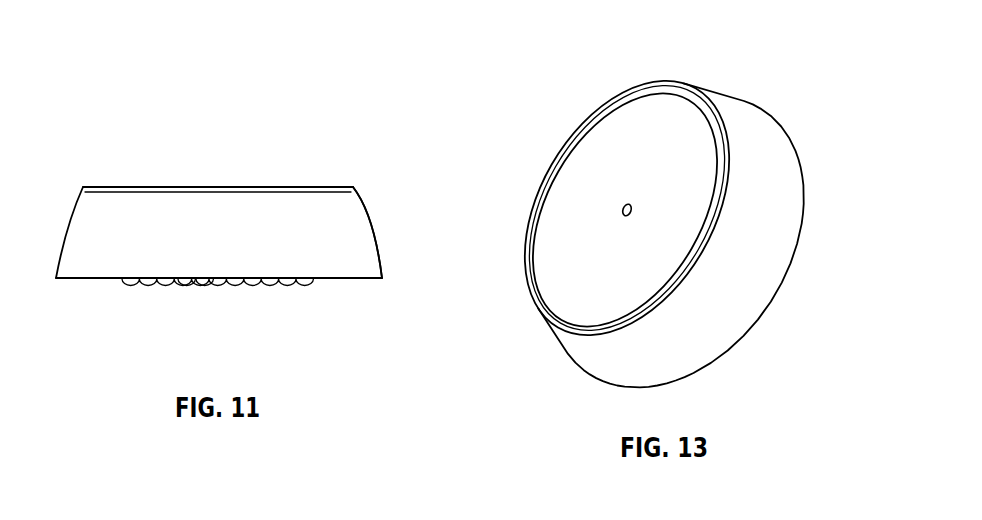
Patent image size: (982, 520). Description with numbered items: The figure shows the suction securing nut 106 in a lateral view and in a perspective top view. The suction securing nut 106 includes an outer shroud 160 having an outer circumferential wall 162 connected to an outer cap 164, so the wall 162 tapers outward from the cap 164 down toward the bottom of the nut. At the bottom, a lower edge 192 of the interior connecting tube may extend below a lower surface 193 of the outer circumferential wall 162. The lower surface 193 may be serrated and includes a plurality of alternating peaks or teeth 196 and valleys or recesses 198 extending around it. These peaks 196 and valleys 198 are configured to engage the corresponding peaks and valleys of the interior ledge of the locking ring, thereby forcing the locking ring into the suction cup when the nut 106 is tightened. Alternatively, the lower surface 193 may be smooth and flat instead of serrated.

In FIG. 11, the suction securing nut 106 is at (123, 159).
In FIG. 13, the suction securing nut 106 is at (553, 141).
In FIG. 11, the outer shroud 160 is at (364, 204).
In FIG. 13, the outer shroud 160 is at (786, 131).
In FIG. 11, the outer circumferential wall 162 is at (350, 253).
In FIG. 13, the outer circumferential wall 162 is at (795, 197).
In FIG. 11, the outer cap 164 is at (272, 187).
In FIG. 13, the outer cap 164 is at (651, 120).
In FIG. 11, the lower edge 192 is at (303, 282).
In FIG. 11, the lower surface 193 is at (372, 280).
In FIG. 11, the peaks 196 is at (187, 282).
In FIG. 11, the valleys 198 is at (199, 282).